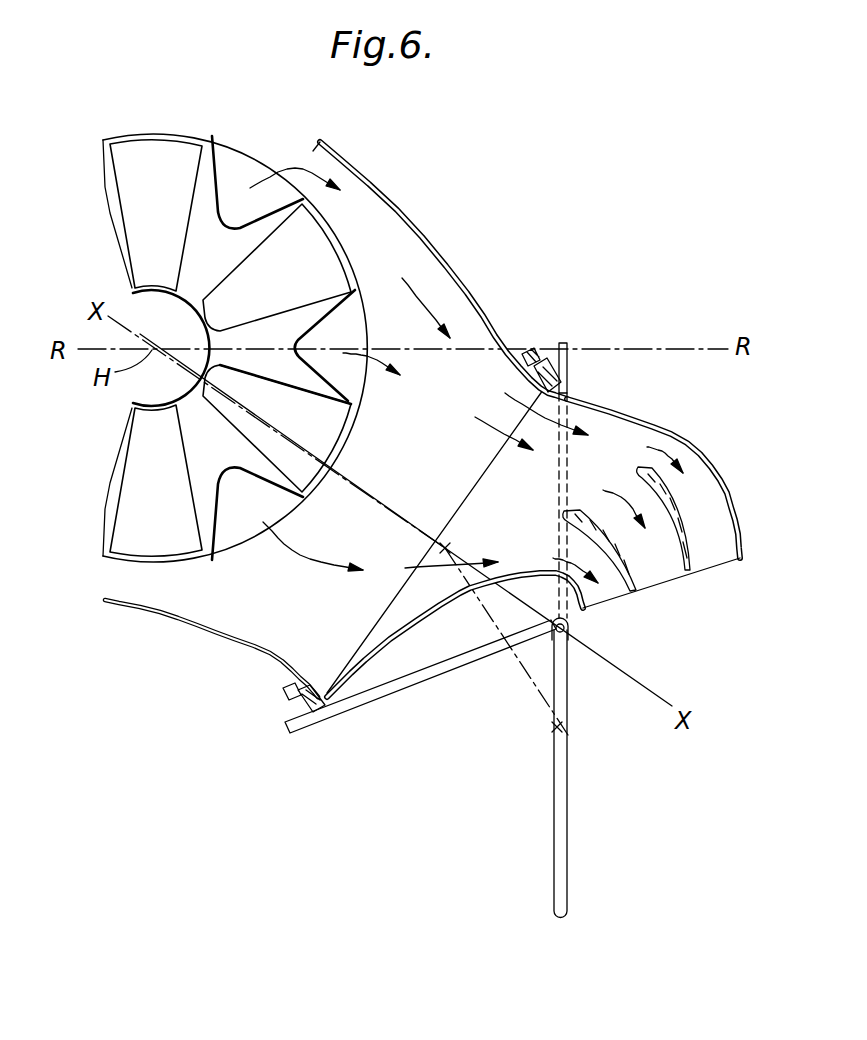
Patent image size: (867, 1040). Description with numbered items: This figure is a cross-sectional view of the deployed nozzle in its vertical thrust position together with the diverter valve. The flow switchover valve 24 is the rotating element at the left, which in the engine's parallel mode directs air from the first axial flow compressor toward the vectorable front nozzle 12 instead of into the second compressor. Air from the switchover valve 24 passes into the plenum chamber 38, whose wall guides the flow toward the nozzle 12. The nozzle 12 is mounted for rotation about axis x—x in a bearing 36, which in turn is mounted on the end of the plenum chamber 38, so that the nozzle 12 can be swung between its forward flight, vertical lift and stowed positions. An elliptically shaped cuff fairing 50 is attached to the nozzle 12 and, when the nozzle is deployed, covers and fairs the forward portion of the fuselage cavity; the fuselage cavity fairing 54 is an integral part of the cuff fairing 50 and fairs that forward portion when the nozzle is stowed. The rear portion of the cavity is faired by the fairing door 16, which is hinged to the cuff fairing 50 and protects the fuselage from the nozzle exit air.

The flow switchover valve 24 is at (343, 243).
The plenum chamber 38 is at (467, 294).
The bearing 36 is at (525, 357).
The cuff fairing 50 is at (568, 373).
The vectorable front nozzle 12 is at (727, 477).
The fuselage cavity fairing 54 is at (433, 677).
The fairing door 16 is at (567, 778).